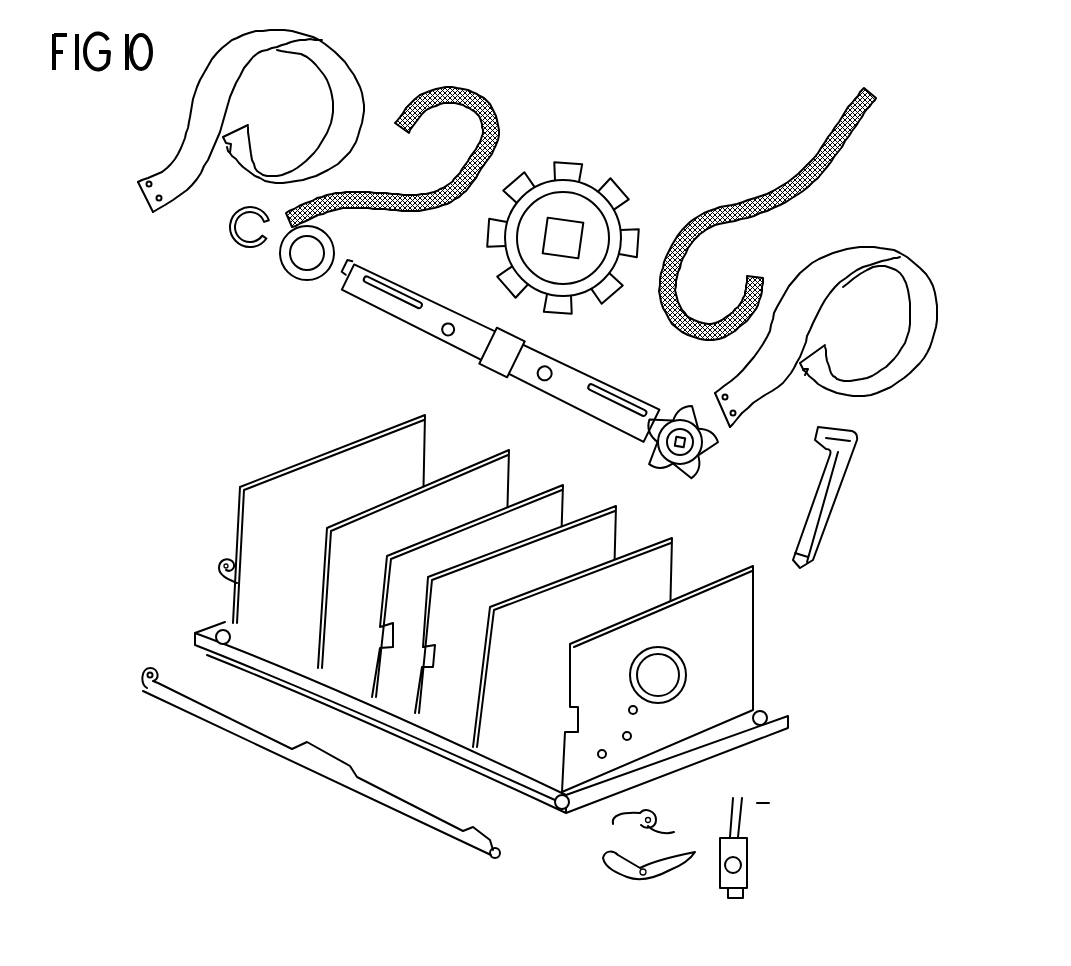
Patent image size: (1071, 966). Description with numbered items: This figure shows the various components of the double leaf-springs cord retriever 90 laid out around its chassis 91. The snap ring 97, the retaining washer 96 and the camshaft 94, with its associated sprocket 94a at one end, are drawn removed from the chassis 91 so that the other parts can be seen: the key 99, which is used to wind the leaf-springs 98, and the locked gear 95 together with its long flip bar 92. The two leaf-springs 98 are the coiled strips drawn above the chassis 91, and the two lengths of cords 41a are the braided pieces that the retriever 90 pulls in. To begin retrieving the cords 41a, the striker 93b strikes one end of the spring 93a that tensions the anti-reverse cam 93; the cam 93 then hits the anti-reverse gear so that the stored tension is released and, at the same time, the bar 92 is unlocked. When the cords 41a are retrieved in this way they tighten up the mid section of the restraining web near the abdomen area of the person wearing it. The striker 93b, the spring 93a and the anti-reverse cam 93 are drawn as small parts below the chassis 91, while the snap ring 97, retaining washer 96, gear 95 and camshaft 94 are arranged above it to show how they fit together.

The cords 41a is at (501, 118).
The double leaf-springs cord retriever 90 is at (229, 476).
The chassis 91 is at (222, 546).
The long flip bar 92 is at (318, 787).
The anti-reverse cam 93 is at (640, 892).
The spring 93a is at (613, 832).
The striker 93b is at (723, 898).
The camshaft 94 is at (347, 313).
The sprocket 94a is at (693, 480).
The locked gear 95 is at (594, 175).
The retaining washer 96 is at (282, 273).
The snap ring 97 is at (227, 237).
The leaf-springs 98 is at (363, 61).
The key 99 is at (830, 537).